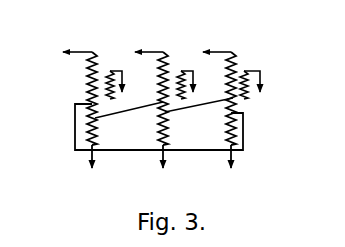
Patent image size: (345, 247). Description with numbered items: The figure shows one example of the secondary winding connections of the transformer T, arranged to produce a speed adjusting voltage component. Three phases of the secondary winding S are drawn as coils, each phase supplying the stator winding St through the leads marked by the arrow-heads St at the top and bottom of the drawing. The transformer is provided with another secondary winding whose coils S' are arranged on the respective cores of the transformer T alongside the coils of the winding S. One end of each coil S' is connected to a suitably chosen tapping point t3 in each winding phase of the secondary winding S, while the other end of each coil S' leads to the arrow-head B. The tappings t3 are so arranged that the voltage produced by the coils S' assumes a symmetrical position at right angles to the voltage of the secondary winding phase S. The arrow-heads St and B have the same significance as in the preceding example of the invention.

The transformer T is at (143, 114).
The secondary winding S is at (155, 98).
The coils of the additional secondary winding S' is at (176, 78).
The tapping point t3 is at (161, 125).
The arrow-head B is at (191, 87).
The stator winding St is at (153, 104).